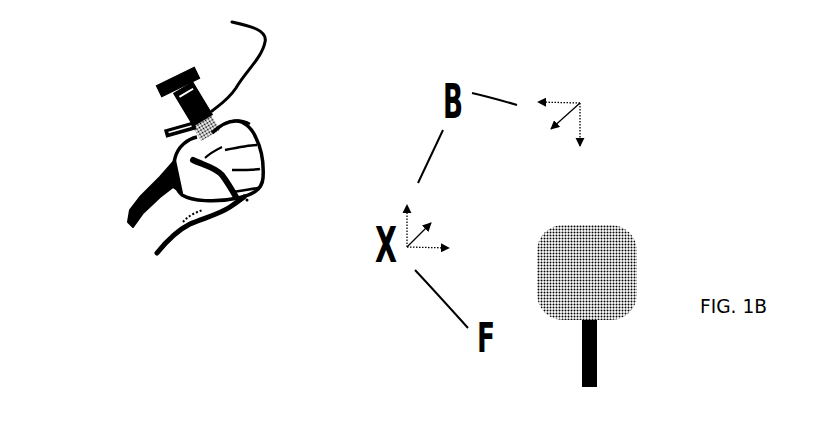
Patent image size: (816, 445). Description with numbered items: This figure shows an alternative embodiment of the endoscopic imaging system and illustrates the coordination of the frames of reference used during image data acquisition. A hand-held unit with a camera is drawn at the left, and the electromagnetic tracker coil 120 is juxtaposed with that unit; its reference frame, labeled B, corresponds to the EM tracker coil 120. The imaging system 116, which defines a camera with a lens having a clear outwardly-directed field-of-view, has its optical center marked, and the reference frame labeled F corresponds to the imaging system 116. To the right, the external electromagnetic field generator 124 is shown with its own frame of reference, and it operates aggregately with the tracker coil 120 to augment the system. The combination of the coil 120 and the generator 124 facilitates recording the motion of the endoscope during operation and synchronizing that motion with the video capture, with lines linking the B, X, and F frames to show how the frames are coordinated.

The electromagnetic tracker coil 120 is at (223, 115).
The imaging system 116 is at (247, 200).
The external electromagnetic field generator 124 is at (578, 160).